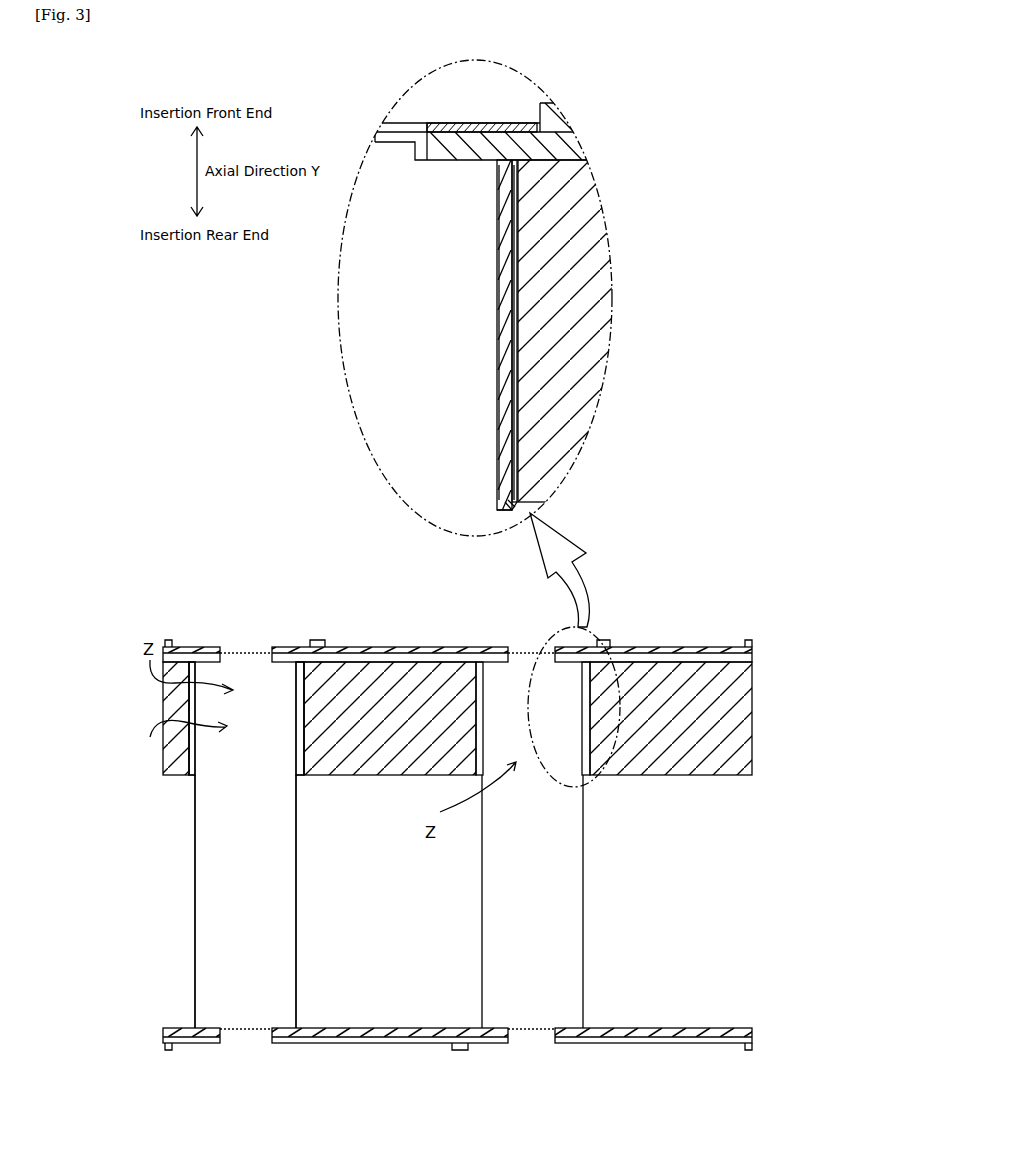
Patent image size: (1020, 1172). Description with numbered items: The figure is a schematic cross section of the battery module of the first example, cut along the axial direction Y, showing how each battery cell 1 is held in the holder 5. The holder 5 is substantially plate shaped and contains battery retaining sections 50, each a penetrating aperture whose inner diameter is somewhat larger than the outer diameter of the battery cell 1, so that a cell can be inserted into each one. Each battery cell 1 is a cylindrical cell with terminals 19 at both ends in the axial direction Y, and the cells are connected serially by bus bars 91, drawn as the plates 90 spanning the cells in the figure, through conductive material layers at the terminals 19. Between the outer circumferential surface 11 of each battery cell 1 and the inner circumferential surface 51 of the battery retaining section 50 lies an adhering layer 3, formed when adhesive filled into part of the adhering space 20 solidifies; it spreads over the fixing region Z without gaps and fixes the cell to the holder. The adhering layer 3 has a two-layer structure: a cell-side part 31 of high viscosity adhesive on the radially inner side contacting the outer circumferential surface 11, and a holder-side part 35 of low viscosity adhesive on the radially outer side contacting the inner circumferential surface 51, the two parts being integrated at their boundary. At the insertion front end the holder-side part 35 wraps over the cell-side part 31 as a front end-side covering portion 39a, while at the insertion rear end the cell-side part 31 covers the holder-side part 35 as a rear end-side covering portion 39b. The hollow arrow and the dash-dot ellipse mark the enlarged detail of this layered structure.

The battery cell 1 is at (342, 302).
The adhering layer 3 is at (488, 313).
The holder 5 is at (600, 242).
The outer circumferential surface 11 is at (296, 800).
The terminal 19 is at (258, 652).
The adhering space 20 is at (500, 515).
The cell-side part 31 is at (506, 262).
The holder-side part 35 is at (512, 206).
The front end-side covering portion 39a is at (505, 124).
The rear end-side covering portion 39b is at (513, 513).
The battery retaining section 50 is at (188, 725).
The inner circumferential surface 51 is at (193, 772).
The shell plate 90 is at (404, 648).
The bus bar 91 is at (216, 648).